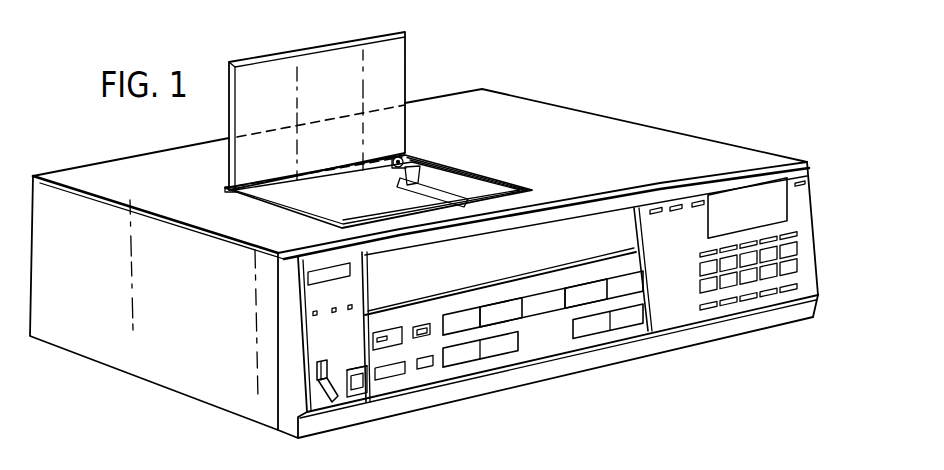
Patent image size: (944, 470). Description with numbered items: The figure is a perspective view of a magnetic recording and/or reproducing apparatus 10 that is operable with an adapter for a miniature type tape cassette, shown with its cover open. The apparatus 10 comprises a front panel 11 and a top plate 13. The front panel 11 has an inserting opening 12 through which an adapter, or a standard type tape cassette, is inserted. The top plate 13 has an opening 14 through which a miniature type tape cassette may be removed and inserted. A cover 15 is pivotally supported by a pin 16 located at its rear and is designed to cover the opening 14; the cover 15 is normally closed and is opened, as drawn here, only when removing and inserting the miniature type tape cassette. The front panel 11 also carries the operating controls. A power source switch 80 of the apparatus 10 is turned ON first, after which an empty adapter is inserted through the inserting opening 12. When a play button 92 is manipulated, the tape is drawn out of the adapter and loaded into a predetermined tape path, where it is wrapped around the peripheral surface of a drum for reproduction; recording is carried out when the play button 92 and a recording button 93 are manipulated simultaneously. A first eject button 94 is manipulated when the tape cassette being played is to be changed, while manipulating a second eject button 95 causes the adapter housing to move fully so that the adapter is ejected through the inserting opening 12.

The magnetic recording and/or reproducing apparatus 10 is at (588, 88).
The front panel 11 is at (675, 313).
The inserting opening 12 is at (465, 278).
The top plate 13 is at (693, 143).
The opening 14 is at (425, 193).
The cover 15 is at (276, 66).
The pin 16 is at (402, 157).
The power source switch 80 is at (330, 400).
The play button 92 is at (508, 313).
The recording button 93 is at (590, 295).
The first eject button 94 is at (392, 377).
The second eject button 95 is at (428, 368).